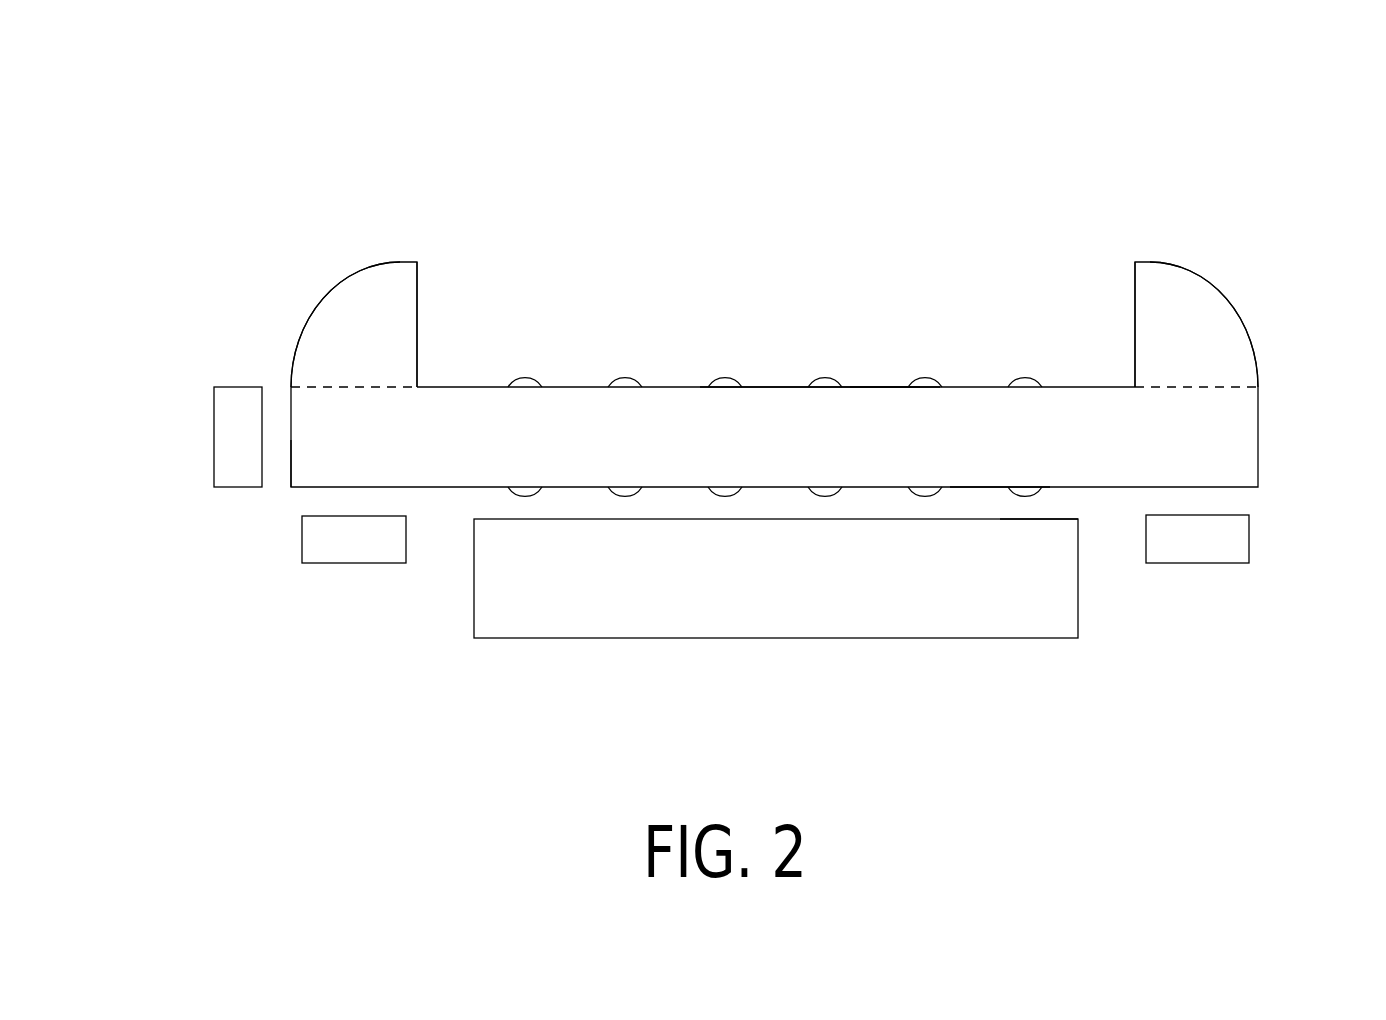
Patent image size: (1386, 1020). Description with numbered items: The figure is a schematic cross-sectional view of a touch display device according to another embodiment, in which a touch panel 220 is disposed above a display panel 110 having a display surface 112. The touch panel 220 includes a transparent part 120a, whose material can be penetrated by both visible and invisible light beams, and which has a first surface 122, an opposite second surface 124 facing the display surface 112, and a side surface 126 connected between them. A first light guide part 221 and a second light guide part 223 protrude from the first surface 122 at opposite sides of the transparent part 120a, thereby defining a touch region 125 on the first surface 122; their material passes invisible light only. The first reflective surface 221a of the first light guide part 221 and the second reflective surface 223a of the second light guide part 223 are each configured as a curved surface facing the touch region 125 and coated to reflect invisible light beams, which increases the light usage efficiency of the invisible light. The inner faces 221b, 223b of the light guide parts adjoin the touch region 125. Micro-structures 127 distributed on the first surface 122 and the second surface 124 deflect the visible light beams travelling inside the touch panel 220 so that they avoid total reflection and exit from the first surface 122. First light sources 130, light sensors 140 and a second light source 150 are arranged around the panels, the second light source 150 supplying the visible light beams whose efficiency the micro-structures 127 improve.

The display panel 110 is at (550, 638).
The display surface 112 is at (1050, 502).
The transparent part 120a is at (717, 398).
The first surface 122 is at (883, 385).
The second surface 124 is at (997, 487).
The touch region 125 is at (815, 258).
The side surface 126 is at (290, 478).
The micro-structures 127 is at (627, 383).
The first light sources 130 is at (333, 563).
The light sensors 140 is at (1249, 537).
The second light source 150 is at (214, 435).
The touch panel 220 is at (268, 162).
The first light guide part 221 is at (392, 280).
The first reflective surface 221a is at (340, 299).
The inner surface of first side wall 221b is at (433, 361).
The second light guide part 223 is at (1177, 280).
The second reflective surface 223a is at (1210, 299).
The inner surface of second side wall 223b is at (1135, 357).